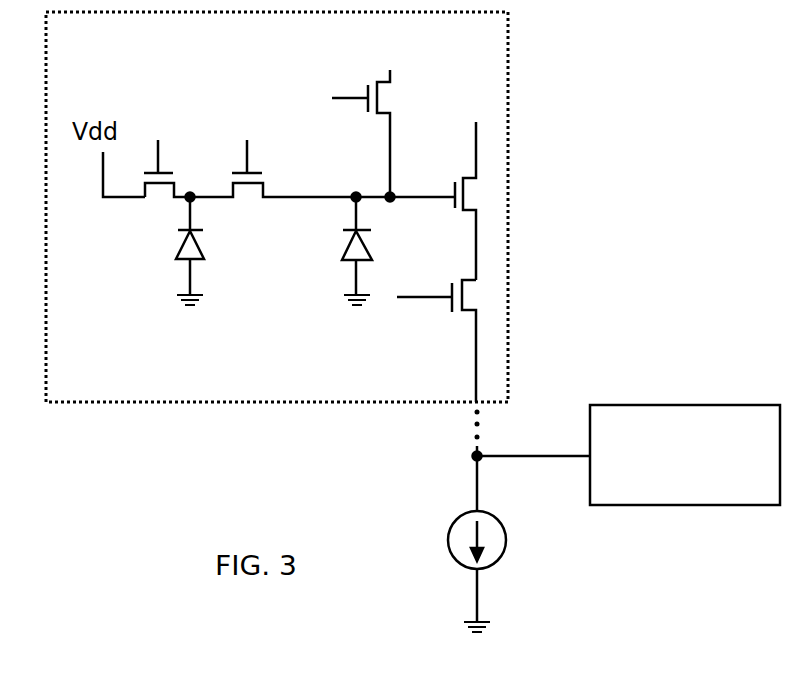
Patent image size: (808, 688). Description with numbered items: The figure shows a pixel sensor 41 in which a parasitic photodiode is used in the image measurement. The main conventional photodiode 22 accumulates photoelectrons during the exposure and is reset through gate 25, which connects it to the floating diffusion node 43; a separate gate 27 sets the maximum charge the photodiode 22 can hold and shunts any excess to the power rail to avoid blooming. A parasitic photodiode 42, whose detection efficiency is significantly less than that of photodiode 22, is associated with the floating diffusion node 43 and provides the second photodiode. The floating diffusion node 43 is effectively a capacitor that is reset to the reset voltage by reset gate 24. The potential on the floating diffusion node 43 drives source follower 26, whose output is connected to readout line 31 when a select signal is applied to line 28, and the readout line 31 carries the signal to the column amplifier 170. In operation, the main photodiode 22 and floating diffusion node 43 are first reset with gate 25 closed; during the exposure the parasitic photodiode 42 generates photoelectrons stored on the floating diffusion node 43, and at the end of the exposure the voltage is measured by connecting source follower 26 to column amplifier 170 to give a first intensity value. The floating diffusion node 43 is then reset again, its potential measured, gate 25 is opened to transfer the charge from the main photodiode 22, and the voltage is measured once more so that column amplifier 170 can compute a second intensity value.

The pixel sensor 41 is at (165, 403).
The gate 27 is at (148, 198).
The photodiode 22 is at (201, 243).
The gate 25 is at (250, 186).
The floating diffusion node 43 is at (370, 195).
The parasitic photodiode 42 is at (367, 243).
The reset gate 24 is at (383, 100).
The source follower 26 is at (470, 177).
The line 28 is at (412, 298).
The readout line 31 is at (477, 485).
The column amplifier 170 is at (702, 403).